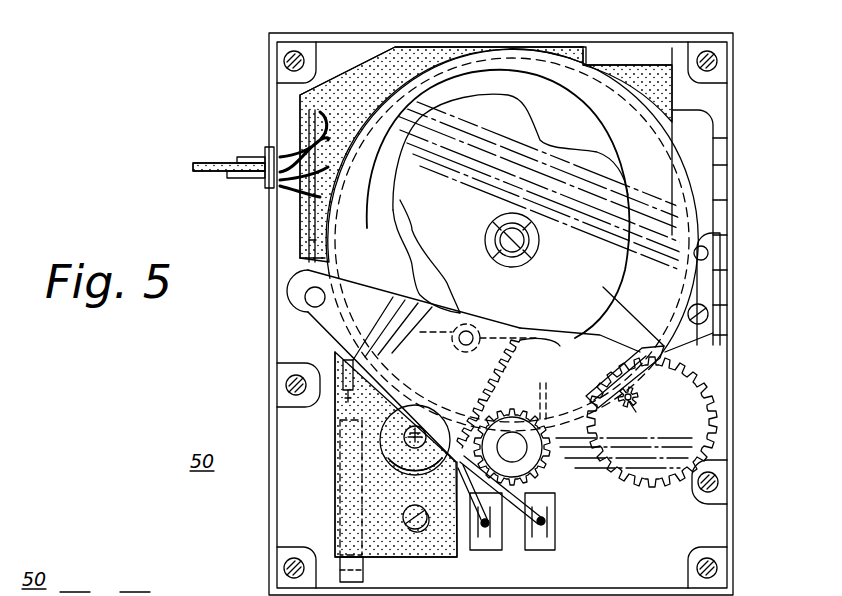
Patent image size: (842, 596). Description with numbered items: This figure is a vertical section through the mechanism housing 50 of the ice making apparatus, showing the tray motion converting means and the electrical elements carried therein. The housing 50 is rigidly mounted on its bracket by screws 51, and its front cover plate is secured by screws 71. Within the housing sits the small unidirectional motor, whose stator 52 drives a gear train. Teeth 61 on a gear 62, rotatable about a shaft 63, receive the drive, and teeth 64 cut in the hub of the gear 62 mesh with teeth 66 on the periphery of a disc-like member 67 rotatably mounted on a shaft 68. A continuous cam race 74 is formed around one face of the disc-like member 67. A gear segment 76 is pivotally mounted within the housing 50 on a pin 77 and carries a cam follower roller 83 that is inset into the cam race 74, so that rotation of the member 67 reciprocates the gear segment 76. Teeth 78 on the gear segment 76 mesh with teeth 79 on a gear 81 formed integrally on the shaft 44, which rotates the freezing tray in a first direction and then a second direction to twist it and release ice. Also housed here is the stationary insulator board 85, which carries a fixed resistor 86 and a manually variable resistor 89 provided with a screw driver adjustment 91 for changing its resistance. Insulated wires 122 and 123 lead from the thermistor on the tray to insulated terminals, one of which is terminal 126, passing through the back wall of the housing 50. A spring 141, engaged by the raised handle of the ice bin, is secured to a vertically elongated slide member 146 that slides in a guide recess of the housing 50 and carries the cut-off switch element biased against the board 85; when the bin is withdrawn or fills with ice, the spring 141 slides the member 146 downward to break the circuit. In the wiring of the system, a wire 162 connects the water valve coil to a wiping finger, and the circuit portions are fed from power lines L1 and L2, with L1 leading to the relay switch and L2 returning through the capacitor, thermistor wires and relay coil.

The shaft 44 is at (522, 452).
The housing 50 is at (501, 314).
The screws 51 is at (286, 385).
The stator 52 is at (642, 62).
The teeth 61 is at (713, 372).
The gear 62 is at (697, 414).
The shaft 63 is at (640, 396).
The teeth 64 is at (636, 409).
The teeth 66 is at (642, 365).
The disc-like member 67 is at (677, 212).
The shaft 68 is at (521, 236).
The screws 71 is at (286, 61).
The cam race 74 is at (597, 170).
The gear segment 76 is at (368, 293).
The pin 77 is at (290, 312).
The teeth 78 is at (533, 333).
The teeth 79 is at (510, 410).
The gear 81 is at (530, 474).
The cam follower roller 83 is at (440, 334).
The insulator board 85 is at (346, 74).
The fixed resistor 86 is at (343, 373).
The variable resistor 89 is at (433, 458).
The screw driver adjustment 91 is at (420, 447).
The insulated wire 122 is at (309, 117).
The insulated wire 123 is at (313, 246).
The insulated terminal 126 is at (486, 530).
The spring 141 is at (355, 579).
The slide member 146 is at (340, 452).
The wire 162 is at (207, 163).
The power line L1 is at (241, 157).
The power line L2 is at (240, 178).